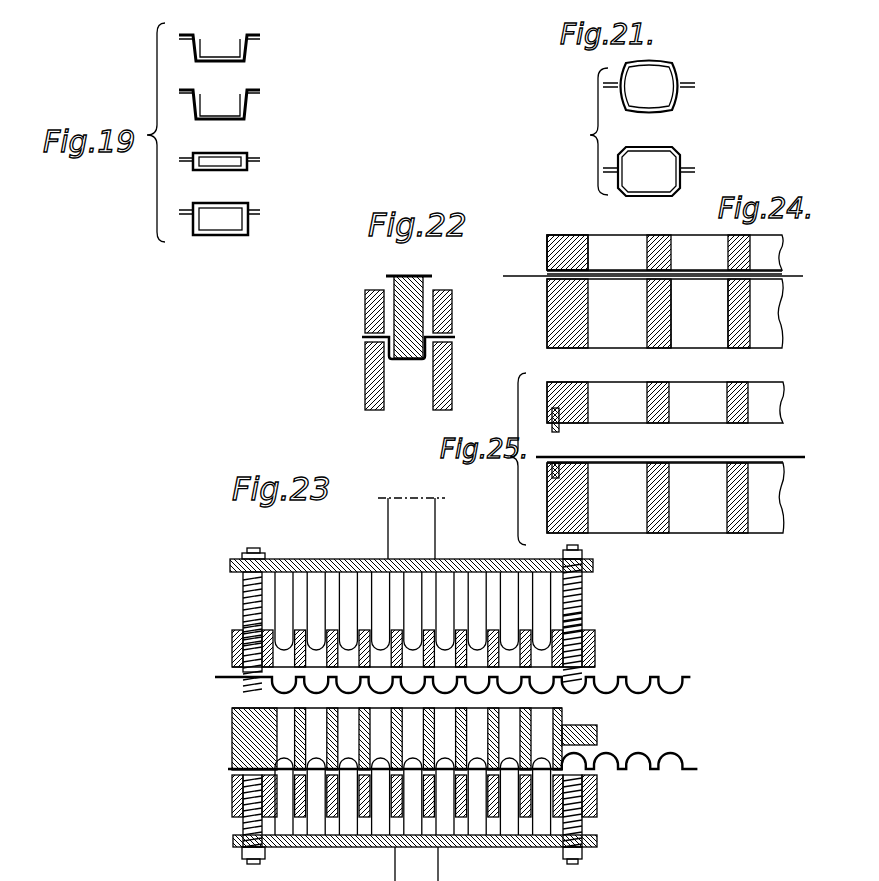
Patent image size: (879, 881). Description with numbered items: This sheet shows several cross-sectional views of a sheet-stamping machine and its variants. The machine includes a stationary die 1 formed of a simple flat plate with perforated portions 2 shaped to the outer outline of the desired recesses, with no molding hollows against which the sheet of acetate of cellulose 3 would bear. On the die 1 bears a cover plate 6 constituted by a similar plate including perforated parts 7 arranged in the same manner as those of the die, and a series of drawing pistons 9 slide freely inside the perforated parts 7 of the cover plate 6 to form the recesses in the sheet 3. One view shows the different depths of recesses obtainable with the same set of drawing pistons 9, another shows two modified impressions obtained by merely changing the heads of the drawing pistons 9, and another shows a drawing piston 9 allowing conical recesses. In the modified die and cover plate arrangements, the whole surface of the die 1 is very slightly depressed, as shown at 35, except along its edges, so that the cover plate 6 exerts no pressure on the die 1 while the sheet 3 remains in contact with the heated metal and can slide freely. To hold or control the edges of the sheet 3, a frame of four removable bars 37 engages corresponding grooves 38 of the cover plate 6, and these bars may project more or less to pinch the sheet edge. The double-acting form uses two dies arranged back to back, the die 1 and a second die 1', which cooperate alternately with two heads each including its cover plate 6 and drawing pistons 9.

In FIG. 24, the stationary die 1 is at (648, 313).
In FIG. 25, the stationary die 1 is at (654, 498).
In FIG. 23, the die 1' is at (433, 735).
In FIG. 24, the perforated portions 2 is at (710, 338).
In FIG. 24, the sheet of acetate of cellulose 3 is at (515, 270).
In FIG. 25, the sheet of acetate of cellulose 3 is at (671, 452).
In FIG. 24, the cover plate 6 is at (572, 247).
In FIG. 25, the cover plate 6 is at (577, 395).
In FIG. 23, the cover plate 6 is at (597, 657).
In FIG. 24, the perforated parts 7 is at (695, 247).
In FIG. 23, the drawing pistons 9 is at (543, 607).
In FIG. 24, the depression of the die surface 35 is at (568, 272).
In FIG. 25, the depression of the die surface 35 is at (575, 466).
In FIG. 25, the removable bars 37 is at (560, 431).
In FIG. 25, the grooves 38 is at (555, 470).